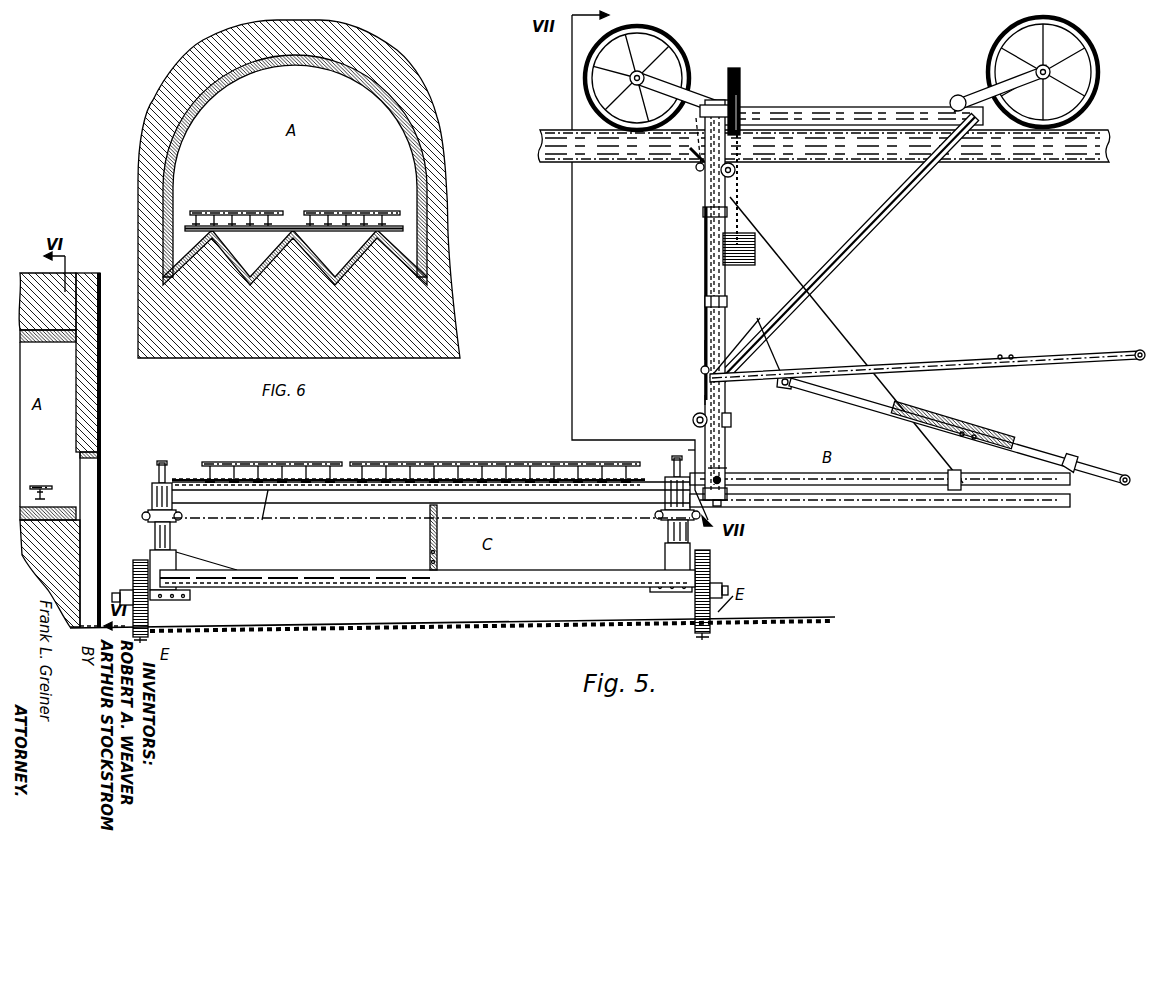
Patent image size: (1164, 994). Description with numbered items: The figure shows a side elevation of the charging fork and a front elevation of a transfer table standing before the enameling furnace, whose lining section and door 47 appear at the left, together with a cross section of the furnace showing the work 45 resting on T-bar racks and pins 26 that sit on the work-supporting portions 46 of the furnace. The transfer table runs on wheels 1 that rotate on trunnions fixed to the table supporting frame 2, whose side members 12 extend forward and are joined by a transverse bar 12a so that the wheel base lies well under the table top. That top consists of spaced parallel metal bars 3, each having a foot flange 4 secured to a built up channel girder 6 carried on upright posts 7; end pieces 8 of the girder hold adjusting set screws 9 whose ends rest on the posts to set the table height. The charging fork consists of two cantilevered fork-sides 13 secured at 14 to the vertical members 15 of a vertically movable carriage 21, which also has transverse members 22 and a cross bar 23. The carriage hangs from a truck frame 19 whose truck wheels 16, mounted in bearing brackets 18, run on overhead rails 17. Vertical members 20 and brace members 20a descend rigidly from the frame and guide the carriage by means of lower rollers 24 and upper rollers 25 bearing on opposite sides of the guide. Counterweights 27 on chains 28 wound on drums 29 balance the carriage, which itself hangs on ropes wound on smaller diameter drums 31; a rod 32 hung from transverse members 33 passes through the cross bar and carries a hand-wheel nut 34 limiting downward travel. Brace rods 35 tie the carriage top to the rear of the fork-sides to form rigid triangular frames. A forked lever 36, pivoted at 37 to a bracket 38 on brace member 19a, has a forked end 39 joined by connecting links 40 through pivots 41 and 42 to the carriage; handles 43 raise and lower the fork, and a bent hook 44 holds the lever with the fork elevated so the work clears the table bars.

In FIG. 5, the wheels 1 is at (130, 568).
In FIG. 5, the table supporting frame 2 is at (580, 585).
In FIG. 5, the metal bars 3 is at (232, 470).
In FIG. 5, the foot flange 4 is at (612, 490).
In FIG. 5, the channel girder 6 is at (556, 505).
In FIG. 5, the upright posts 7 is at (172, 540).
In FIG. 5, the end pieces 8 is at (150, 488).
In FIG. 5, the adjusting set screws 9 is at (159, 466).
In FIG. 5, the side members 12 is at (155, 570).
In FIG. 5, the transverse bar 12a is at (372, 587).
In FIG. 5, the fork-sides 13 is at (325, 515).
In FIG. 5, the securing point 14 is at (722, 478).
In FIG. 5, the vertical members 15 is at (722, 470).
In FIG. 5, the truck wheels 16 is at (672, 55).
In FIG. 5, the overhead rails 17 is at (1005, 160).
In FIG. 5, the bearing brackets 18 is at (700, 92).
In FIG. 5, the truck frame 19 is at (822, 107).
In FIG. 5, the brace member 19a is at (888, 218).
In FIG. 5, the vertical members 20 is at (705, 240).
In FIG. 5, the brace members 20a is at (705, 263).
In FIG. 5, the vertically movable carriage 21 is at (700, 172).
In FIG. 5, the transverse member 22 is at (700, 166).
In FIG. 5, the cross bar 23 is at (732, 420).
In FIG. 5, the lower rollers 24 is at (692, 420).
In FIG. 5, the upper rollers 25 is at (736, 172).
In FIG. 6, the racks and pins 26 is at (268, 214).
In FIG. 5, the counterweights 27 is at (760, 245).
In FIG. 5, the chains 28 is at (740, 192).
In FIG. 5, the drums 29 is at (742, 82).
In FIG. 5, the smaller diameter drums 31 is at (740, 78).
In FIG. 5, the rod 32 is at (705, 294).
In FIG. 5, the transverse members 33 is at (692, 135).
In FIG. 5, the hand-wheel nut 34 is at (694, 452).
In FIG. 5, the brace rods 35 is at (840, 318).
In FIG. 5, the forked lever 36 is at (1030, 355).
In FIG. 5, the pivot 37 is at (790, 388).
In FIG. 5, the bracket 38 is at (772, 348).
In FIG. 5, the forked end 39 is at (728, 355).
In FIG. 5, the connecting link 40 is at (700, 368).
In FIG. 5, the pivot 41 is at (705, 345).
In FIG. 5, the pivot 42 is at (704, 400).
In FIG. 5, the handles 43 is at (1138, 350).
In FIG. 5, the bent hook 44 is at (1075, 455).
In FIG. 6, the work 45 is at (230, 211).
In FIG. 6, the work-supporting portions 46 is at (225, 240).
In FIG. 5, the work-supporting portions 46 is at (48, 507).
In FIG. 5, the door 47 is at (102, 384).